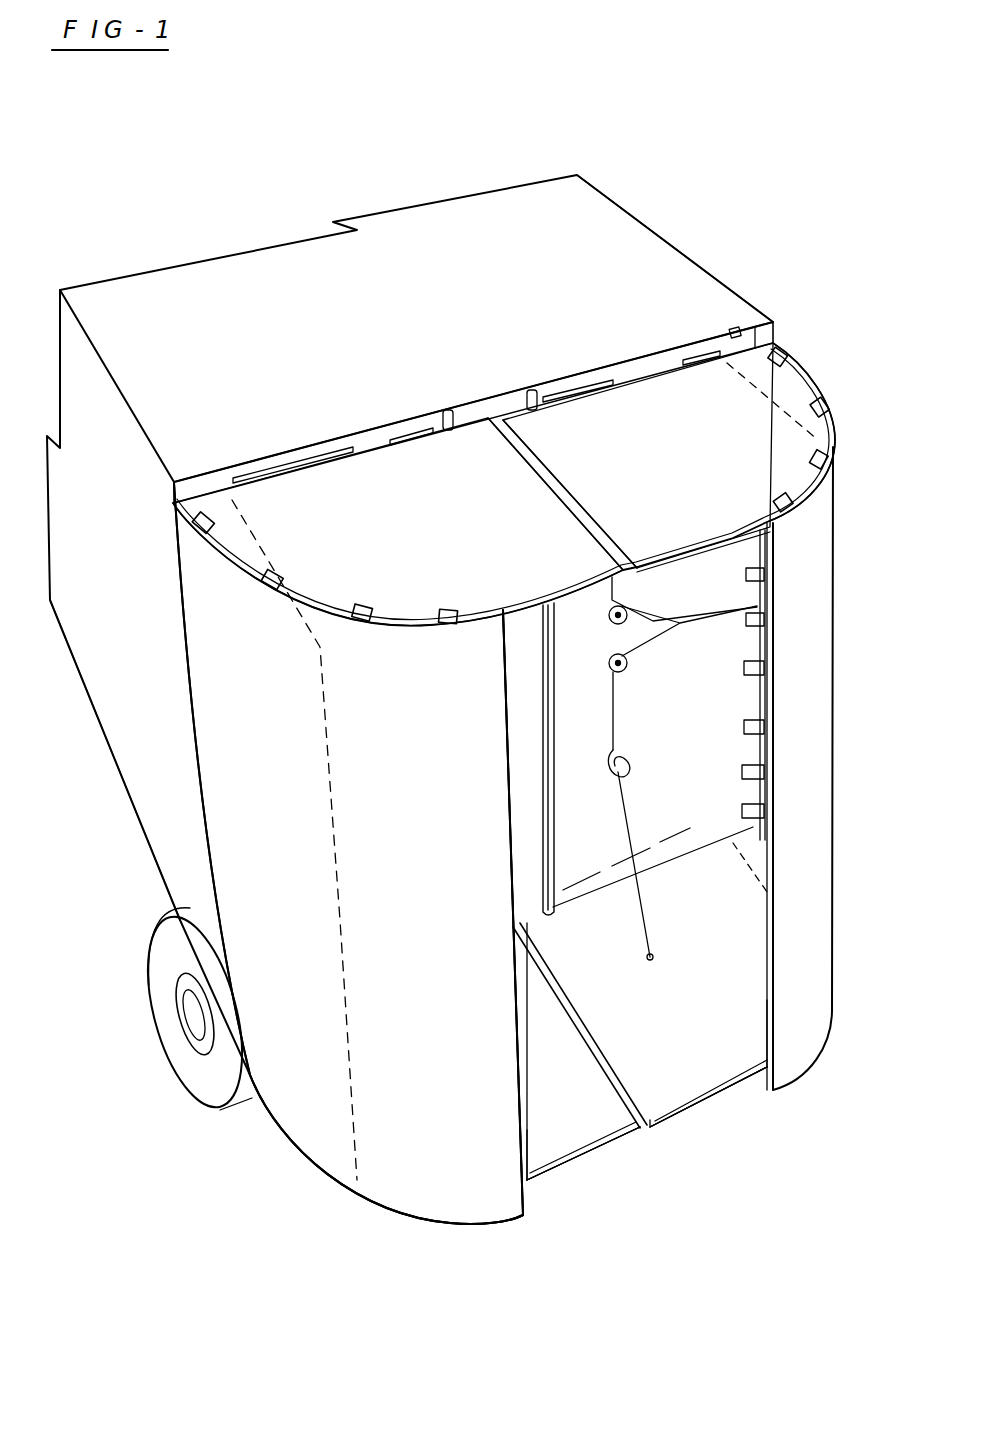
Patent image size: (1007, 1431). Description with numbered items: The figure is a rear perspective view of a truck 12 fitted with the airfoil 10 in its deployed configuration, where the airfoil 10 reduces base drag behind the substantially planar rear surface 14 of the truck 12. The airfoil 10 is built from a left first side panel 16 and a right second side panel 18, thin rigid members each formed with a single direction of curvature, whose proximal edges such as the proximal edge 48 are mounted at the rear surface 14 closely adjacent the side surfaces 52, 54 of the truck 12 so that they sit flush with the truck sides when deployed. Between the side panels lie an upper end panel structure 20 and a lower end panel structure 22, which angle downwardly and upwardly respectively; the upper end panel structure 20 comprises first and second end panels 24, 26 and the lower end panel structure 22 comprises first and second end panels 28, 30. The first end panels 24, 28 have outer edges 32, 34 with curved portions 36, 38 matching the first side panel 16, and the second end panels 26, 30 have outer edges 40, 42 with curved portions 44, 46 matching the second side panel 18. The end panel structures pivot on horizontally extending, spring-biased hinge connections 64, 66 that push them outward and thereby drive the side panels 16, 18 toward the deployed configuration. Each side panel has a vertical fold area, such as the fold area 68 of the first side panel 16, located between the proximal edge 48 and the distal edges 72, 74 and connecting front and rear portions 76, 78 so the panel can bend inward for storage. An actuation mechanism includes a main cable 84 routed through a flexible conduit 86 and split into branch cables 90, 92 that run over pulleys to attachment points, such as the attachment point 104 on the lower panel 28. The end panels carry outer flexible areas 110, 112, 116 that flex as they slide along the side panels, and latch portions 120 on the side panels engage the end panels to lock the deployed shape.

The airfoil 10 is at (304, 1169).
The truck 12 is at (600, 222).
The rear surface 14 is at (753, 338).
The first side panel 16 is at (300, 1096).
The second side panel 18 is at (815, 633).
The upper end panel structure 20 is at (447, 467).
The lower end panel structure 22 is at (643, 1130).
The first end panel 24 is at (380, 470).
The second end panel 26 is at (593, 417).
The first end panel 28 is at (557, 1157).
The second end panel 30 is at (710, 1067).
The outer edge 32 is at (553, 592).
The outer edge 34 is at (593, 1157).
The curved portion 36 is at (428, 617).
The curved portion 38 is at (533, 1172).
The outer edge 40 is at (663, 560).
The outer edge 42 is at (683, 1113).
The curved portion 44 is at (803, 500).
The curved portion 46 is at (760, 1070).
The proximal edge 48 is at (200, 733).
The side surface 52 is at (107, 428).
The side surface 54 is at (683, 257).
The hinge connection 64 is at (320, 452).
The hinge connection 66 is at (653, 851).
The fold area 68 is at (340, 1160).
The distal edge 72 is at (520, 1037).
The distal edge 74 is at (767, 1008).
The front portion 76 is at (253, 853).
The rear portion 78 is at (490, 867).
The main cable 84 is at (690, 620).
The flexible conduit 86 is at (727, 620).
The branch cable 90 is at (610, 598).
The branch cable 92 is at (613, 712).
The attachment point 104 is at (653, 957).
The outer flexible area 110 is at (220, 508).
The outer flexible area 112 is at (757, 370).
The outer flexible area 116 is at (760, 853).
The latch portion 120 is at (797, 357).